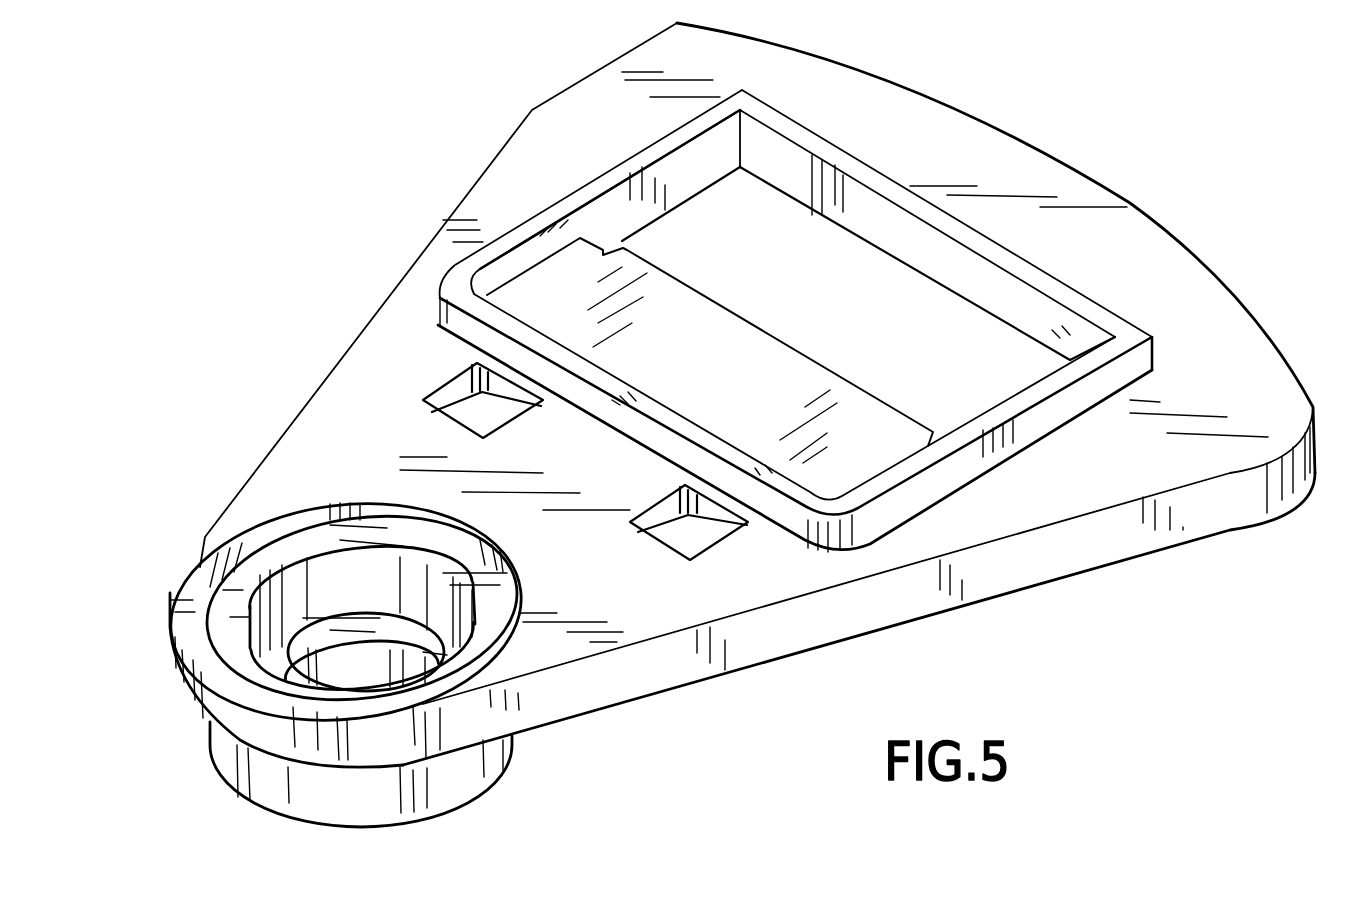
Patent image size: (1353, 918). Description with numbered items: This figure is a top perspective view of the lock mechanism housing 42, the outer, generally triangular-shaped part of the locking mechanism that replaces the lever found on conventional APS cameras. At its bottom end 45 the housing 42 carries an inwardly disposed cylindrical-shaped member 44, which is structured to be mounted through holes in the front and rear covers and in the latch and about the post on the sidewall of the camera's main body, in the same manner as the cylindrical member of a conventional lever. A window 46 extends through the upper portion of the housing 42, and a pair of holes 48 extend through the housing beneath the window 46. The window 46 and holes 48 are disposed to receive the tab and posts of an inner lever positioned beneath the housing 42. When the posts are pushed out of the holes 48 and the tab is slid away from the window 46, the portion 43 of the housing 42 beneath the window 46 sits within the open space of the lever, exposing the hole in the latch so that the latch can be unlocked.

The housing 42 is at (417, 175).
The portion of the housing beneath the window 43 is at (833, 458).
The cylindrical-shaped member 44 is at (443, 787).
The bottom end 45 is at (198, 568).
The window 46 is at (975, 340).
The holes 48 is at (483, 415).